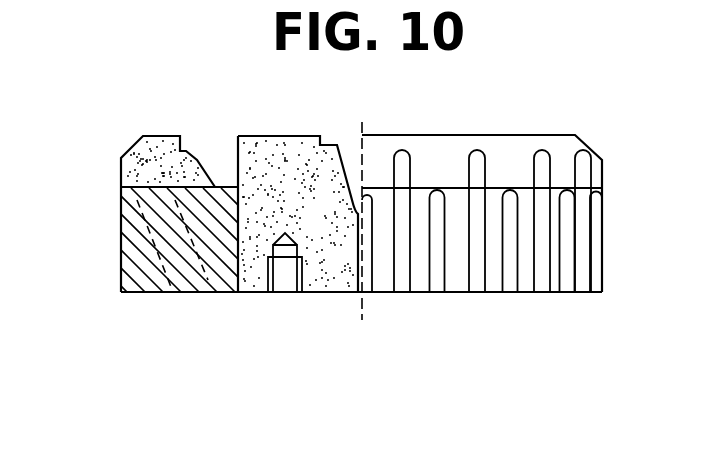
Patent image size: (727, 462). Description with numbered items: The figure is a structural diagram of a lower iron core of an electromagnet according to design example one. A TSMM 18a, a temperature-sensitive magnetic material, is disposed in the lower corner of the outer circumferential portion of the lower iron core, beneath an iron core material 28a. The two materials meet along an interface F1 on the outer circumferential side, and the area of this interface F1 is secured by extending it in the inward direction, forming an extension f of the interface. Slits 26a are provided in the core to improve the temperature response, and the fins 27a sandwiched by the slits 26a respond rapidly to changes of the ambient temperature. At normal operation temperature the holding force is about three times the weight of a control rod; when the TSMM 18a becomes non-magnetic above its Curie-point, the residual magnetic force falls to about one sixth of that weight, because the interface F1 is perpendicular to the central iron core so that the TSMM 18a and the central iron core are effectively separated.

The TSMM 18a is at (128, 273).
The iron core material 28a is at (142, 137).
The slits 26a is at (172, 292).
The fins 27a is at (500, 280).
The extension of the interface f is at (217, 186).
The interface F1 is at (120, 188).